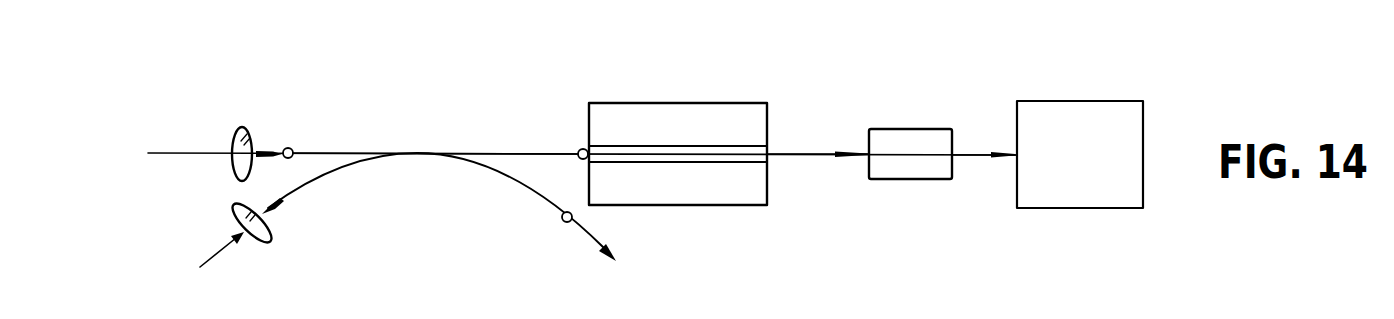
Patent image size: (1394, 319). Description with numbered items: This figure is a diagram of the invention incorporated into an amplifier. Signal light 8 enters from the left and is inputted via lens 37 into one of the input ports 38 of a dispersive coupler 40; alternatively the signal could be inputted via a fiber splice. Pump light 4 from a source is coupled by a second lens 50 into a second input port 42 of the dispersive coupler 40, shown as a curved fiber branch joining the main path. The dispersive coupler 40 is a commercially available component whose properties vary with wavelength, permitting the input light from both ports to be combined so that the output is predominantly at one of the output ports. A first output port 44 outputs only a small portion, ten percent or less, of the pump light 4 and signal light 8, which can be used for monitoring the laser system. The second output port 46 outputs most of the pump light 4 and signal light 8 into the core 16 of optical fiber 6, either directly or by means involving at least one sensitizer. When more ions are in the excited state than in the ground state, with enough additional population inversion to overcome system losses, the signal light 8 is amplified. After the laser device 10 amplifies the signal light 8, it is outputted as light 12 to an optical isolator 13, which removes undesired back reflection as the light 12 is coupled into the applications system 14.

The pump light 4 is at (209, 262).
The optical fiber 6 is at (705, 145).
The signal light 8 is at (567, 154).
The laser device 10 is at (738, 207).
The output light 12 is at (803, 156).
The optical isolator 13 is at (905, 137).
The applications system 14 is at (1080, 113).
The core 16 is at (677, 161).
The lens 37 is at (233, 143).
The input port 38 is at (289, 148).
The dispersive coupler 40 is at (355, 152).
The second input port 42 is at (292, 193).
The first output port 44 is at (562, 219).
The second output port 46 is at (579, 152).
The lens 50 is at (233, 208).